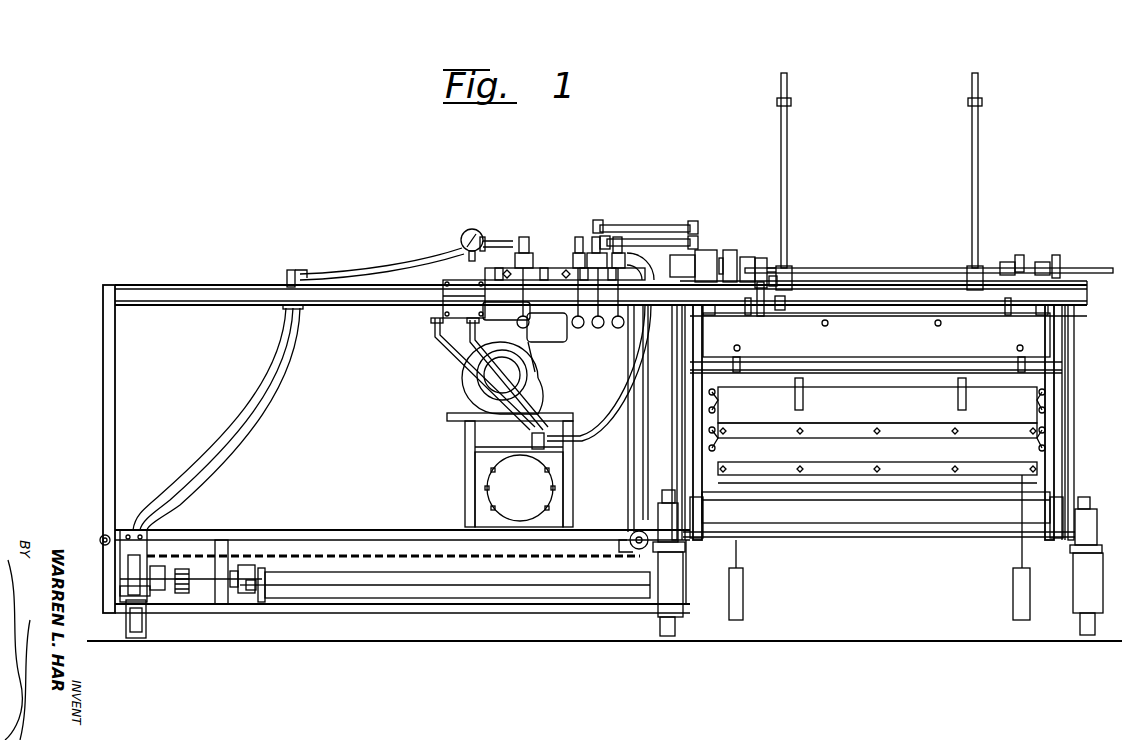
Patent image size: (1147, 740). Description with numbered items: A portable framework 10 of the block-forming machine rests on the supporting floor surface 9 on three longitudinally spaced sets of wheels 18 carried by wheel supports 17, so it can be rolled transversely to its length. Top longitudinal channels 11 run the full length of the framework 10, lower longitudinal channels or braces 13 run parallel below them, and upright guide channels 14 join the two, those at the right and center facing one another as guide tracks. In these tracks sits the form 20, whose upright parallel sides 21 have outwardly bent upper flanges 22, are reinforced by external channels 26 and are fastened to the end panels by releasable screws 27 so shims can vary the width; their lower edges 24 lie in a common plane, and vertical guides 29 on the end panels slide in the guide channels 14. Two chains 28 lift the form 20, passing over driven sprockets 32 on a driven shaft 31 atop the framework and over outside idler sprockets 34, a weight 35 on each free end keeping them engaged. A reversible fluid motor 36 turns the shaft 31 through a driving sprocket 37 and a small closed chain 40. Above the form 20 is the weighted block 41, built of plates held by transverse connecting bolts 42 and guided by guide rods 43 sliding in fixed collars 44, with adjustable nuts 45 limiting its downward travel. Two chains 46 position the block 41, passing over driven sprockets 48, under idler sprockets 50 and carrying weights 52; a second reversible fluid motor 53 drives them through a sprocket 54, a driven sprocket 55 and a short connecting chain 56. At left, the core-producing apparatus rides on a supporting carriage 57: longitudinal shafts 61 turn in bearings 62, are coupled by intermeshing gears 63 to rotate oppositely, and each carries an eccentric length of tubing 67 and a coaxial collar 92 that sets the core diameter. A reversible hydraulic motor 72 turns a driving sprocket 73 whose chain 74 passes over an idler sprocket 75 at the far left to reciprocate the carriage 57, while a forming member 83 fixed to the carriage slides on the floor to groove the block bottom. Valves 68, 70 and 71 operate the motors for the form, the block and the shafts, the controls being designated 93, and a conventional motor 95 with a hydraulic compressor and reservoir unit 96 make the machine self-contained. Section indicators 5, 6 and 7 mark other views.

The section line 5- 5 is at (658, 366).
The section line 6- 6 is at (84, 558).
The section line 7- 7 is at (858, 192).
The supporting floor surface 9 is at (807, 640).
The framework 10 is at (1082, 323).
The top longitudinal channels 11 is at (1088, 295).
The lower longitudinal channels 13 is at (878, 530).
The upright guide channels 14 is at (676, 425).
The wheel supports 17 is at (120, 620).
The wheels 18 is at (136, 636).
The form 20 is at (850, 497).
The sides 21 is at (880, 417).
The upper flange 22 is at (900, 378).
The lower edges 24 is at (926, 496).
The external channels 26 is at (935, 451).
The releasable screws 27 is at (877, 427).
The chains 28 is at (693, 337).
The vertical guides 29 is at (682, 404).
The driven shaft 31 is at (903, 268).
The driven sprockets 32 is at (1058, 255).
The outside idler sprockets 34 is at (708, 315).
The weight 35 is at (704, 513).
The reversible fluid motor 36 is at (708, 255).
The driving sprocket 37 is at (735, 250).
The small closed chain 40 is at (758, 300).
The weighted block 41 is at (870, 349).
The transverse connecting bolts 42 is at (740, 347).
The guide rods 43 is at (788, 165).
The fixed collars 44 is at (793, 270).
The adjustable nuts 45 is at (792, 102).
The chains 46 is at (741, 368).
The driven sprockets 48 is at (1020, 255).
The idler sprockets 50 is at (748, 315).
The weights 52 is at (743, 588).
The reversible fluid motor 53 is at (767, 262).
The sprocket 54 is at (768, 262).
The driven sprocket 55 is at (786, 302).
The short connecting chain 56 is at (778, 264).
The supporting carriage 57 is at (203, 577).
The longitudinal shaft 61 is at (213, 600).
The bearings 62 is at (160, 572).
The intermeshing gears 63 is at (182, 569).
The tubing 67 is at (408, 582).
The valve 68 is at (597, 235).
The valve 70 is at (636, 260).
The valve 71 is at (525, 253).
The hydraulic motor 72 is at (588, 253).
The driving sprocket 73 is at (630, 538).
The chain 74 is at (536, 552).
The idler sprocket 75 is at (100, 541).
The forming member 83 is at (440, 630).
The coaxial collars 92 is at (285, 594).
The controls 93 is at (573, 258).
The conventional motor 95 is at (528, 370).
The hydraulic compressor and reservoir unit 96 is at (530, 497).